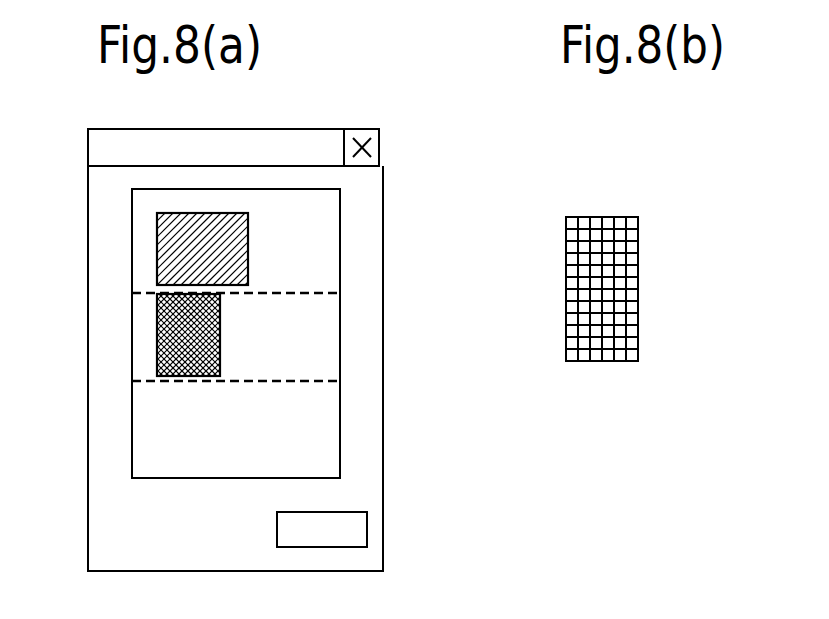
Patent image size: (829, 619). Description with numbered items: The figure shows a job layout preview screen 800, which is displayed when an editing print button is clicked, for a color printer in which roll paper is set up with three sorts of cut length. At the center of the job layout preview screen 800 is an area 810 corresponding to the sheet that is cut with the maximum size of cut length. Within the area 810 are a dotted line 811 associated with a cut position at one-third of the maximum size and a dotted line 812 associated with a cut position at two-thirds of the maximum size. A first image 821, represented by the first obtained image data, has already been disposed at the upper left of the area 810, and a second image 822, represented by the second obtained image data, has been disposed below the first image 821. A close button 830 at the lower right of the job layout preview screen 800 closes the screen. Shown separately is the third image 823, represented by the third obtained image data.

In FIG. 8A, the job layout preview screen 800 is at (364, 112).
In FIG. 8A, the area 810 is at (338, 233).
In FIG. 8A, the dotted line 811 is at (325, 293).
In FIG. 8A, the dotted line 812 is at (315, 381).
In FIG. 8A, the first image 821 is at (157, 237).
In FIG. 8A, the second image 822 is at (157, 340).
In FIG. 8B, the third image 823 is at (638, 232).
In FIG. 8A, the close button 830 is at (367, 527).